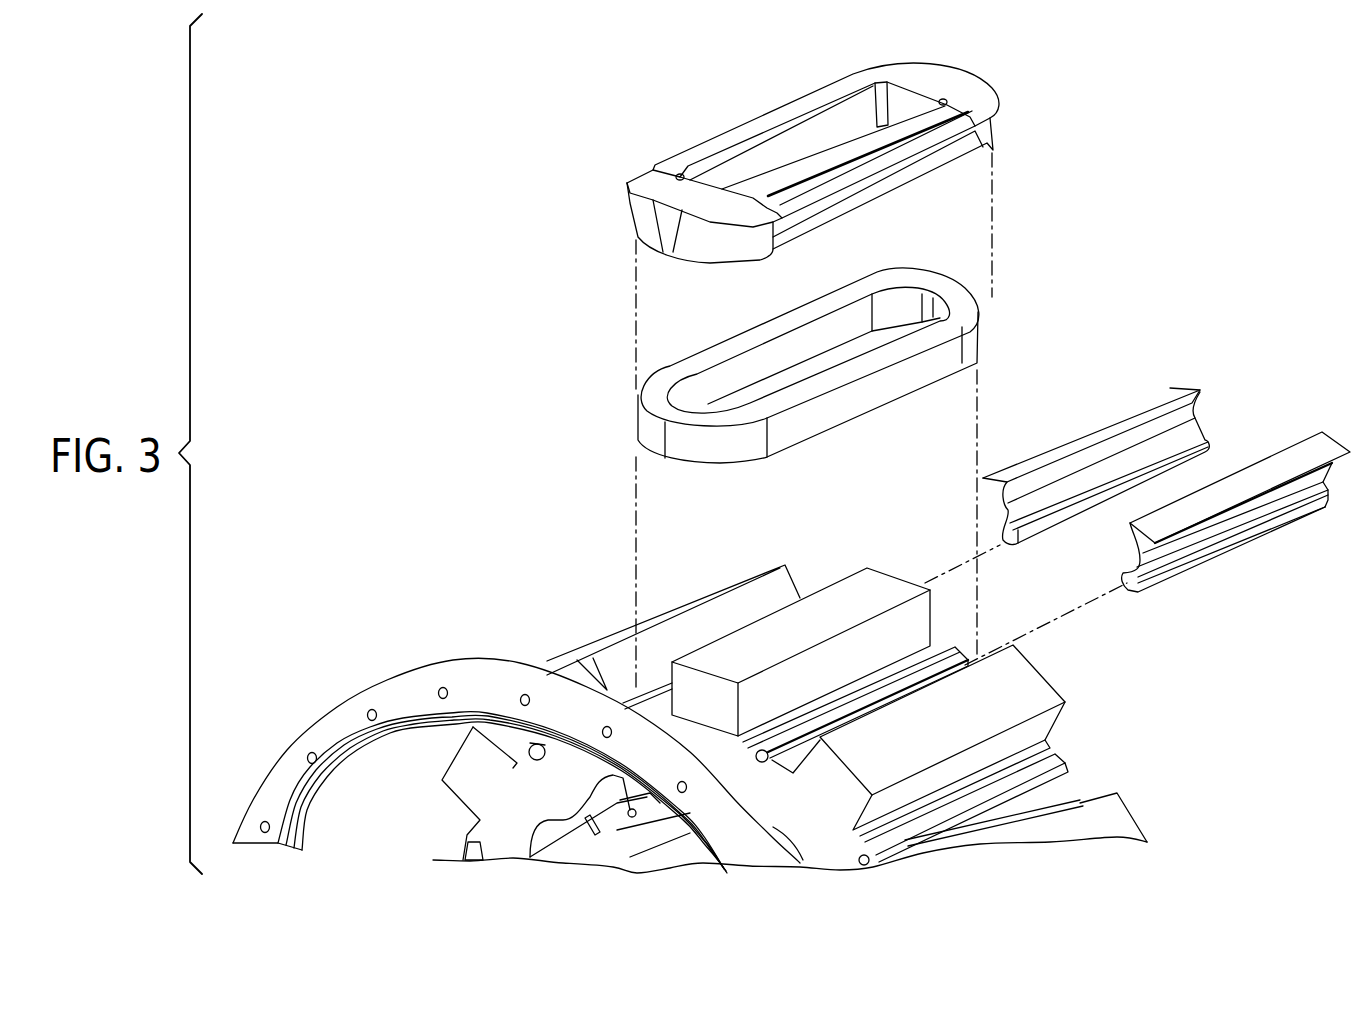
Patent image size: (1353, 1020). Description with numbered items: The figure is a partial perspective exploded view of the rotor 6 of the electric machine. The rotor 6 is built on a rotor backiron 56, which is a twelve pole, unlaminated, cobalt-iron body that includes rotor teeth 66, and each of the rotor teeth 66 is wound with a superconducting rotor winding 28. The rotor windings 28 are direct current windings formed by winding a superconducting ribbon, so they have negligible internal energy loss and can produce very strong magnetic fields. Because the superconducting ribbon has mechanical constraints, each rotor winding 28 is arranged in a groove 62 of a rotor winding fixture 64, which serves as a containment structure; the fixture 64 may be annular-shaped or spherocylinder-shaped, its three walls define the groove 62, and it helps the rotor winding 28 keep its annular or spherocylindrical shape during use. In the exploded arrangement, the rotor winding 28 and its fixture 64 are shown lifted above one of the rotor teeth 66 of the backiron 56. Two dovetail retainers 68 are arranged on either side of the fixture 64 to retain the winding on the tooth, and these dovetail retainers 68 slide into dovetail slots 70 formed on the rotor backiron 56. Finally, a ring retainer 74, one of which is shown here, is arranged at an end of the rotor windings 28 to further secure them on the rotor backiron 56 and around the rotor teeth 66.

The rotor 6 is at (1221, 312).
The rotor windings 28 is at (653, 427).
The rotor backiron 56 is at (818, 827).
The groove 62 is at (806, 191).
The rotor winding fixture 64 is at (651, 186).
The rotor teeth 66 is at (866, 590).
The dovetail retainers 68 is at (1153, 403).
The dovetail slots 70 is at (763, 758).
The ring retainer 74 is at (337, 722).